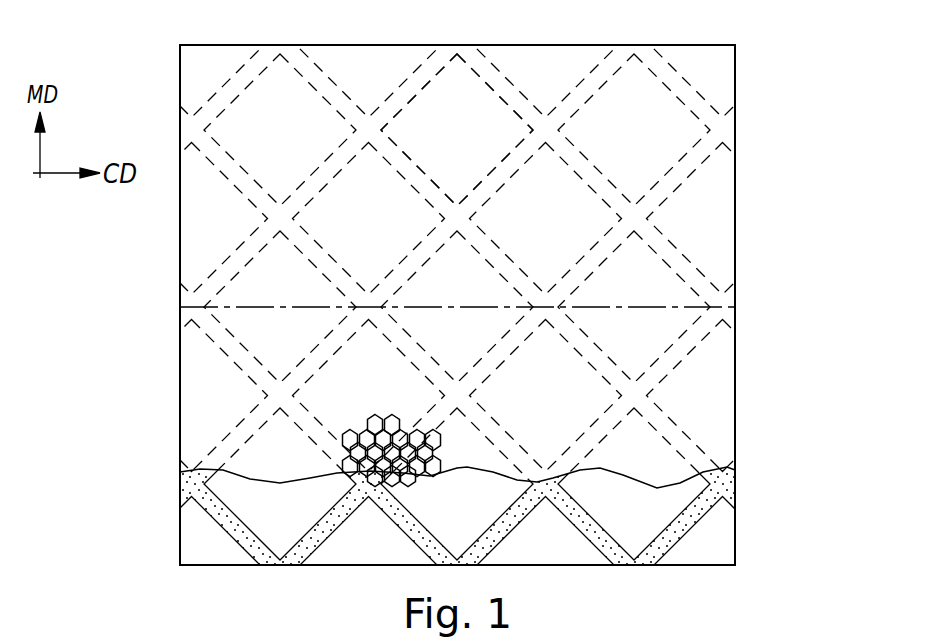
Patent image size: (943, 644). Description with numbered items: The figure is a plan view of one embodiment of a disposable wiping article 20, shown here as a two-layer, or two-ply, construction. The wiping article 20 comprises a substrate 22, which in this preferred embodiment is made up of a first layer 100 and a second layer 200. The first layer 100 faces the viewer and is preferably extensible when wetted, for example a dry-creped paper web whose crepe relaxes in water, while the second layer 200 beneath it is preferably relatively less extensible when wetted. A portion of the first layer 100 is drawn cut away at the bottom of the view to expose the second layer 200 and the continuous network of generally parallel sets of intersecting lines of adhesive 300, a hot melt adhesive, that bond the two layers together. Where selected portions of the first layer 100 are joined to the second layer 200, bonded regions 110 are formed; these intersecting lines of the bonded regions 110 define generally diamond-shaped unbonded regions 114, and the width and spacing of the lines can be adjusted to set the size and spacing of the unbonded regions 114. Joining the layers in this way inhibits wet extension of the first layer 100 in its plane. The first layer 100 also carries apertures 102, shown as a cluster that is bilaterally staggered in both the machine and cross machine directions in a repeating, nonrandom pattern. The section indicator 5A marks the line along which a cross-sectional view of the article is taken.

The disposable wiping article 20 is at (788, 73).
The substrate 22 is at (752, 173).
The bonded regions 110 is at (507, 85).
The unbonded regions 114 is at (435, 103).
The first layer 100 is at (720, 440).
The second layer 200 is at (705, 525).
The adhesive 300 is at (621, 560).
The apertures 102 is at (403, 480).
The section line 5A is at (180, 307).